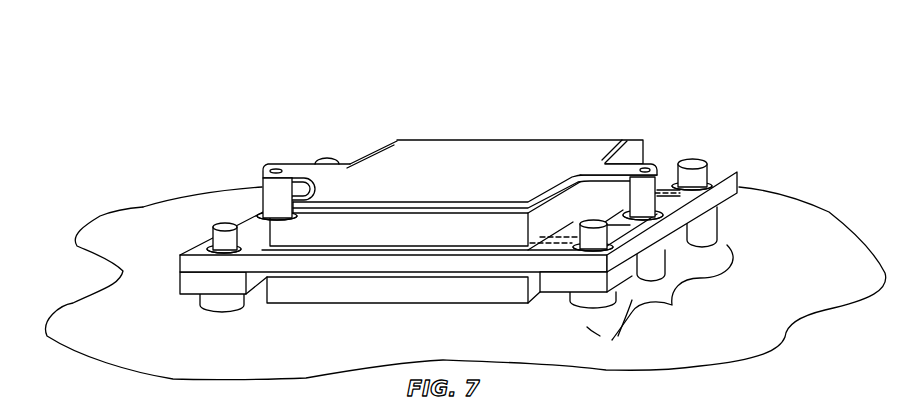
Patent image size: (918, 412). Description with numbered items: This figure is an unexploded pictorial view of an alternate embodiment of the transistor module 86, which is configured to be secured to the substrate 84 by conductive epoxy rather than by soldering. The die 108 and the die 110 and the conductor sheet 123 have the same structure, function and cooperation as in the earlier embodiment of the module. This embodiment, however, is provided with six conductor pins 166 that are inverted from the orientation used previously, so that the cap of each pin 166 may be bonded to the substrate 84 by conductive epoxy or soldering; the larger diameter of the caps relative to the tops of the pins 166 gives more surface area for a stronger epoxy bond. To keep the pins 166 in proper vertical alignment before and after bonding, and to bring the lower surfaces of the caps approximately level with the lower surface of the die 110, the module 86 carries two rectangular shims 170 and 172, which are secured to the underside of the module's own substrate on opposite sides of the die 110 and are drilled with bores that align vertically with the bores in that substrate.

The transistor module 86 is at (458, 186).
The substrate 84 is at (396, 348).
The die 108 is at (635, 140).
The die 110 is at (347, 305).
The conductor sheet 123 is at (567, 148).
The conductor pins 166 is at (466, 283).
The rectangular shim 170 is at (267, 279).
The rectangular shim 172 is at (565, 284).